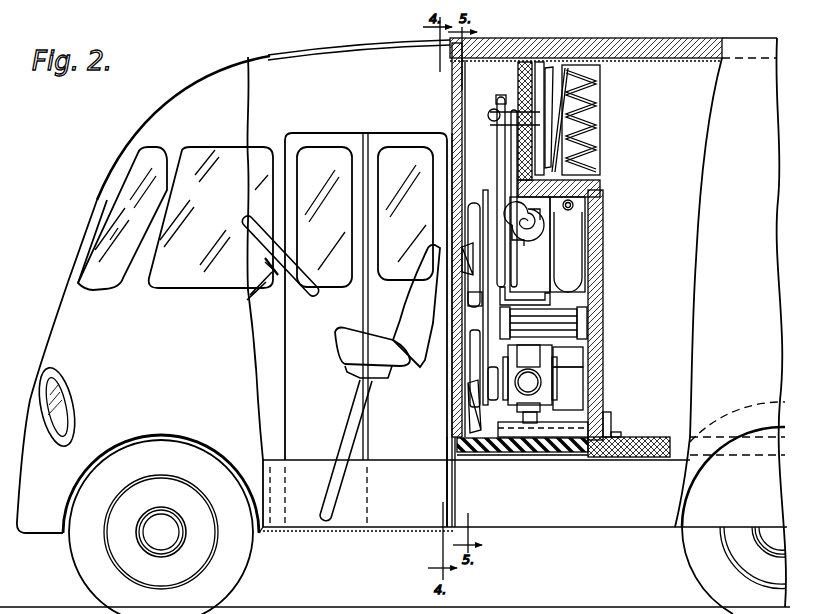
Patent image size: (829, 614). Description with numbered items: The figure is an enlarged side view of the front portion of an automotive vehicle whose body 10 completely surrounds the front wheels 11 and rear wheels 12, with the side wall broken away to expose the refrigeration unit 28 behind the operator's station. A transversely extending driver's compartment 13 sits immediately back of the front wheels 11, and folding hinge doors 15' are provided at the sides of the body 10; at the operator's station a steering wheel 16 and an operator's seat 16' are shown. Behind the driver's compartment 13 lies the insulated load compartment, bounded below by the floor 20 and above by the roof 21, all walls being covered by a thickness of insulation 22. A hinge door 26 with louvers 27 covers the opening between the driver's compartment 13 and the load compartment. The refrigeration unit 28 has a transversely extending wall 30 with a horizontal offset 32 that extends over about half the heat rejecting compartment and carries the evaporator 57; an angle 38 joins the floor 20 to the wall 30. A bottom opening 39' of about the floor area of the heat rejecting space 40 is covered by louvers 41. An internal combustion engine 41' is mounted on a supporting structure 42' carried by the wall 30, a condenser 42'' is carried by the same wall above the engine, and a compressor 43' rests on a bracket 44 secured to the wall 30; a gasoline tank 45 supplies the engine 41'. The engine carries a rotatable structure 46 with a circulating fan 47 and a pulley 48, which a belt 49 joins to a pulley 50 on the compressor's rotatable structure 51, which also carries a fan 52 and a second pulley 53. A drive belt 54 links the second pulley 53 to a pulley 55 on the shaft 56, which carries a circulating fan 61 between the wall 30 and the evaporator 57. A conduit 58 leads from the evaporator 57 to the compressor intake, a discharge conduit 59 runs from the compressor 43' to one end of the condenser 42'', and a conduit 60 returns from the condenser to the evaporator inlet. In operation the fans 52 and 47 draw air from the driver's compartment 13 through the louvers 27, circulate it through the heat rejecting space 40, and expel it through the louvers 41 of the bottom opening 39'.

The body 10 is at (282, 57).
The front wheels 11 is at (85, 578).
The rear wheels 12 is at (700, 572).
The driver's compartment 13 is at (330, 440).
The folding hinge doors 15' is at (366, 313).
The steering wheel 16 is at (280, 273).
The operator's seat 16' is at (358, 424).
The floor 20 is at (671, 461).
The roof 21 is at (682, 38).
The insulation 22 is at (655, 438).
The hinge door 26 is at (452, 278).
The louvers 27 is at (447, 337).
The refrigeration unit 28 is at (572, 343).
The transversely extending wall 30 is at (602, 297).
The horizontal offset 32 is at (599, 176).
The angle 38 is at (608, 433).
The opening 39' is at (527, 471).
The heat rejecting space 40 is at (573, 385).
The louvers 41 is at (522, 471).
The internal combustion engine 41' is at (516, 452).
The supporting structure 42' is at (543, 456).
The condenser 42'' is at (578, 321).
The compressor 43' is at (587, 244).
The bracket 44 is at (570, 300).
The gasoline tank 45 is at (570, 260).
The rotatable structure 46 is at (483, 398).
The circulating fan 47 is at (452, 465).
The pulley 48 is at (494, 400).
The belt 49 is at (450, 347).
The pulley 50 is at (485, 200).
The rotatable structure 51 is at (480, 225).
The fan 52 is at (480, 233).
The second pulley 53 is at (480, 298).
The drive belt 54 is at (500, 160).
The pulley 55 is at (490, 118).
The shaft 56 is at (493, 112).
The evaporator 57 is at (500, 147).
The conduit 58 is at (570, 88).
The discharge conduit 59 is at (547, 230).
The conduit 60 is at (593, 223).
The circulating fan 61 is at (548, 67).